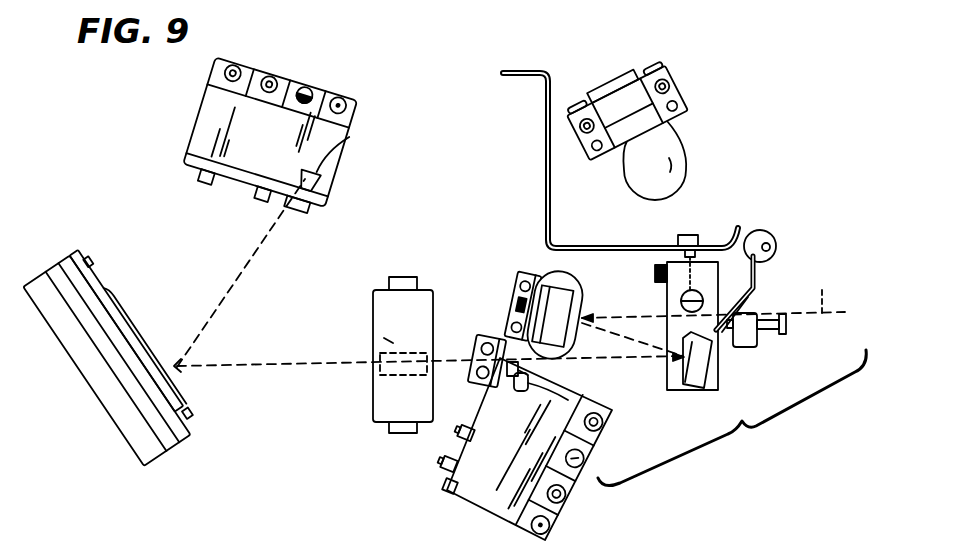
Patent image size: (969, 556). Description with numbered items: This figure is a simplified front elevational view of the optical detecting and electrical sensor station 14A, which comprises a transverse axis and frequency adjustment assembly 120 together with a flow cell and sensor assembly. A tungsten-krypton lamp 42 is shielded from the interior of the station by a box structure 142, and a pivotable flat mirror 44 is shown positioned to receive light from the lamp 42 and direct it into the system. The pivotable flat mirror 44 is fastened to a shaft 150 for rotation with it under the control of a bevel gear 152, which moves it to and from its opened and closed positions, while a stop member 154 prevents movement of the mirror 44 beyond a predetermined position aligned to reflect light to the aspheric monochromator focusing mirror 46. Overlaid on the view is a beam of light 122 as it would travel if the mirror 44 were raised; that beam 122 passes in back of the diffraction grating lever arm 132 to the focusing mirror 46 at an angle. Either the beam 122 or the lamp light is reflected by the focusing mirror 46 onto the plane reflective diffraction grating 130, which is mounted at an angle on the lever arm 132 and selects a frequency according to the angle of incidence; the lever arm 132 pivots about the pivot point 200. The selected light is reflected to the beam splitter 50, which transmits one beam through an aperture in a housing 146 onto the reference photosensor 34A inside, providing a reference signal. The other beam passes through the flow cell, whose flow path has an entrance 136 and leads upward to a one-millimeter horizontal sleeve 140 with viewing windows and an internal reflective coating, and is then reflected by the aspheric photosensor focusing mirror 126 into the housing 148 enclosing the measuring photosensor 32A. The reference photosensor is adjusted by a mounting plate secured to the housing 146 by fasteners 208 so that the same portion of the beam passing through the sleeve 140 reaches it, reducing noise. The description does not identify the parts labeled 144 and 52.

The optical detecting and electrical sensor station 14A is at (437, 56).
The transverse axis and frequency adjustment assembly 120 is at (619, 62).
The beam of light 122 is at (310, 67).
The aspheric photosensor focusing mirror 126 is at (118, 420).
The plane reflective diffraction grating 130 is at (688, 388).
The diffraction grating lever arm 132 is at (708, 388).
The flow path entrance 136 is at (407, 278).
The horizontal sleeve 140 is at (375, 340).
The box structure 142 is at (545, 156).
The support arm 144 is at (713, 244).
The housing 146 is at (472, 508).
The housing 148 is at (350, 148).
The shaft 150 is at (768, 236).
The bevel gear 152 is at (775, 247).
The stop member 154 is at (790, 330).
The pivot point 200 is at (668, 297).
The fasteners 208 is at (458, 436).
The measuring photosensor 32A is at (300, 176).
The reference photosensor 34A is at (562, 387).
The tungsten-krypton lamp 42 is at (688, 150).
The pivotable flat mirror 44 is at (748, 302).
The aspheric monochromator focusing mirror 46 is at (540, 280).
The beam splitter 50 is at (482, 386).
The terminal block 52 is at (442, 485).